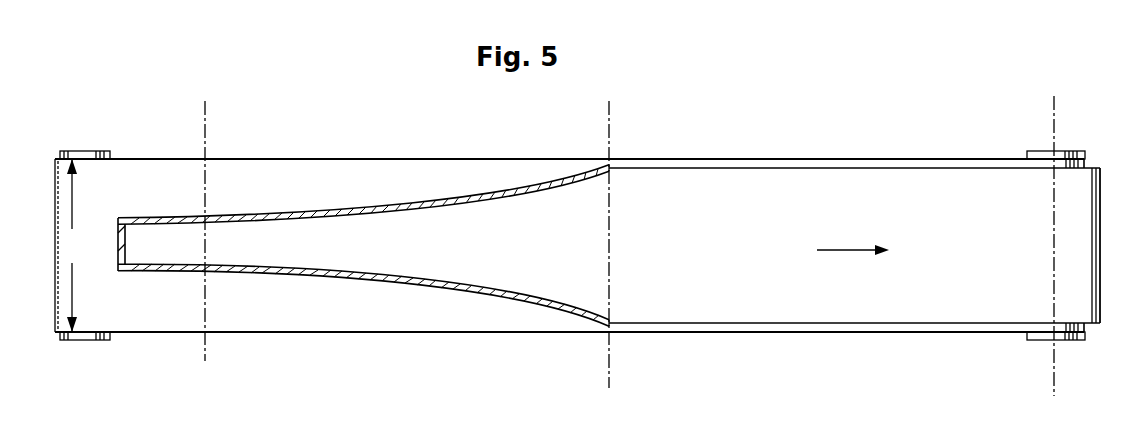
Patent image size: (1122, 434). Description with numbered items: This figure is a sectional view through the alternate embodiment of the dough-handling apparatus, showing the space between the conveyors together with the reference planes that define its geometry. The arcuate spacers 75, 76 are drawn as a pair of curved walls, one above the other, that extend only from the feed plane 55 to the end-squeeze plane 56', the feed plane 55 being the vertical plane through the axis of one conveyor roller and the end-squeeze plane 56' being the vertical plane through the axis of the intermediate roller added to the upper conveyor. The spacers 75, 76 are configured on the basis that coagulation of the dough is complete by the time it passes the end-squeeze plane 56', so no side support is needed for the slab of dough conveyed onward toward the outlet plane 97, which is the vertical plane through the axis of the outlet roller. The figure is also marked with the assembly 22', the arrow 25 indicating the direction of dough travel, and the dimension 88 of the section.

The waveguide horn body 22' is at (577, 199).
The feed plane 55 is at (204, 125).
The end-squeeze plane 56' is at (634, 244).
The arcuate spacer 76 is at (325, 208).
The arcuate spacer 75 is at (323, 281).
The height dimension 88 is at (74, 245).
The direction of propagation 25 is at (873, 252).
The outlet plane 97 is at (1050, 376).